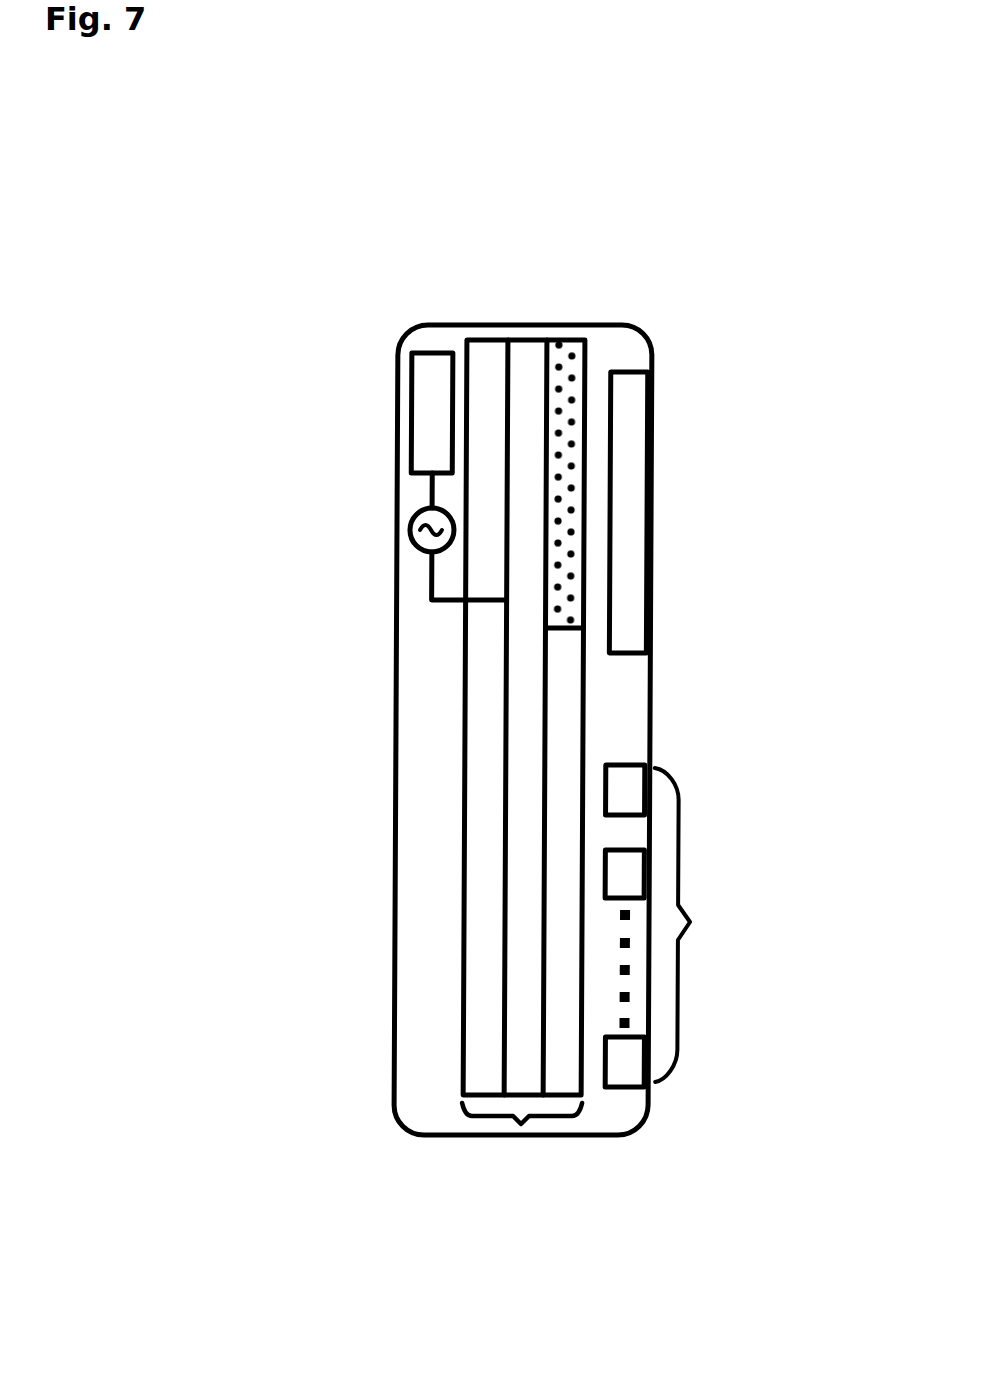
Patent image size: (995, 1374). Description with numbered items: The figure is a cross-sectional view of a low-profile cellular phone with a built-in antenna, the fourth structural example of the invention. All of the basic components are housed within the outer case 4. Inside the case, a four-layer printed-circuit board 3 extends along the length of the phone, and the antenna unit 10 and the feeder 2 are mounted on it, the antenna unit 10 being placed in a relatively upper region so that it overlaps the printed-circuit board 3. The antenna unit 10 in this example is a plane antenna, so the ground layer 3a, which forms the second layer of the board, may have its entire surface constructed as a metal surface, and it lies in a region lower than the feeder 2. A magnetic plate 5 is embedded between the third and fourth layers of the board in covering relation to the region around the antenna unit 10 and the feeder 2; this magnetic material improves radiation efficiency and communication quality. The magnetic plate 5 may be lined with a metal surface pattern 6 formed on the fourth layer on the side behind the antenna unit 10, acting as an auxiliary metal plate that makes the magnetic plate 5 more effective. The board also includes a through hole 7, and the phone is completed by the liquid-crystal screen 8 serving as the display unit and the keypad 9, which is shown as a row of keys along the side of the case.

The feeder 2 is at (412, 522).
The printed-circuit board 3 is at (521, 1124).
The ground layer 3a is at (490, 997).
The outer case 4 is at (397, 820).
The magnetic plate 5 is at (560, 365).
The metal surface pattern 6 is at (595, 352).
The through hole 7 is at (490, 600).
The liquid-crystal screen 8 is at (633, 403).
The keypad 9 is at (690, 922).
The antenna unit 10 is at (412, 342).